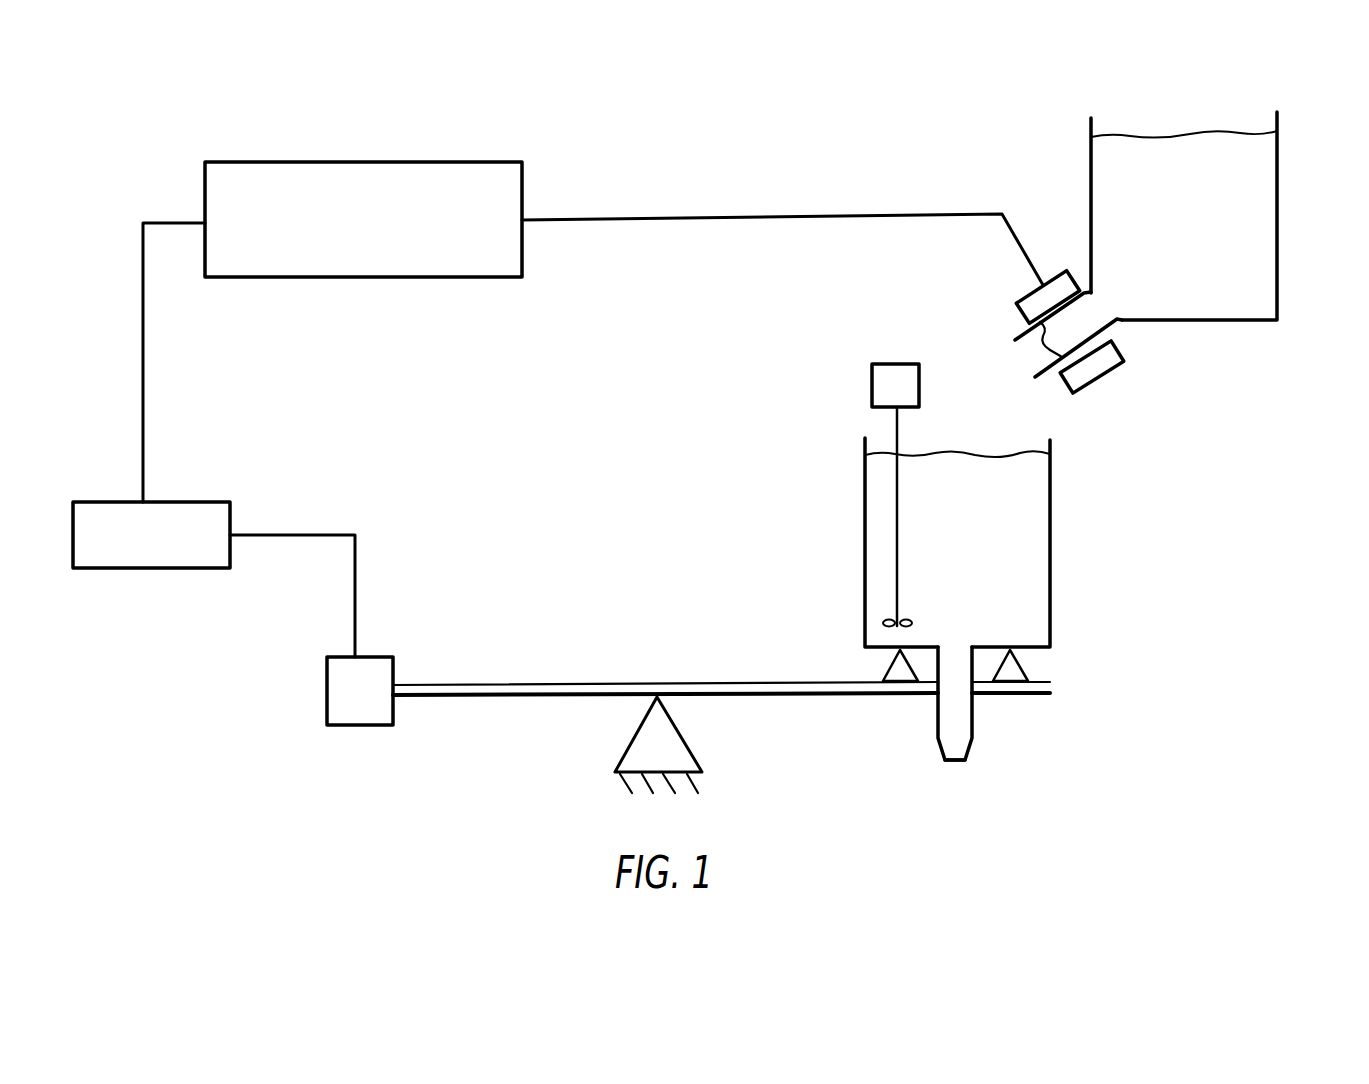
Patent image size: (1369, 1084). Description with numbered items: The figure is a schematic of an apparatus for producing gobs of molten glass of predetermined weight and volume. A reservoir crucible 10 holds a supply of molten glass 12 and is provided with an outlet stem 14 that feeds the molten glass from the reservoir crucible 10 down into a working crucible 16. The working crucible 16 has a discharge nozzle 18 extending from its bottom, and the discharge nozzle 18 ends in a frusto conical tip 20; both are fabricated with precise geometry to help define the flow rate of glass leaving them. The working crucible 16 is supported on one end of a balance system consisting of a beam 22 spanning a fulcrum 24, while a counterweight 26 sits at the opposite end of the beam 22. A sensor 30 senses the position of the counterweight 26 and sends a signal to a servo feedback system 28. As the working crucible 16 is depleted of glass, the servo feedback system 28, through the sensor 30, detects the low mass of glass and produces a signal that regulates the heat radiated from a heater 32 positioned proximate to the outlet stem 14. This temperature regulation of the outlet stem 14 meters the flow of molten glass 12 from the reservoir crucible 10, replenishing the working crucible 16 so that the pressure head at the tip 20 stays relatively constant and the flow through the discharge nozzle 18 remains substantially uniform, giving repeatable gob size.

The reservoir crucible 10 is at (1277, 252).
The molten glass 12 is at (1257, 179).
The outlet stem 14 is at (1117, 323).
The working crucible 16 is at (1050, 547).
The discharge nozzle 18 is at (950, 717).
The frusto conical tip 20 is at (972, 747).
The beam 22 is at (537, 682).
The fulcrum 24 is at (623, 752).
The counterweight 26 is at (327, 705).
The servo feedback system 28 is at (485, 160).
The sensor 30 is at (192, 502).
The heater 32 is at (1028, 292).